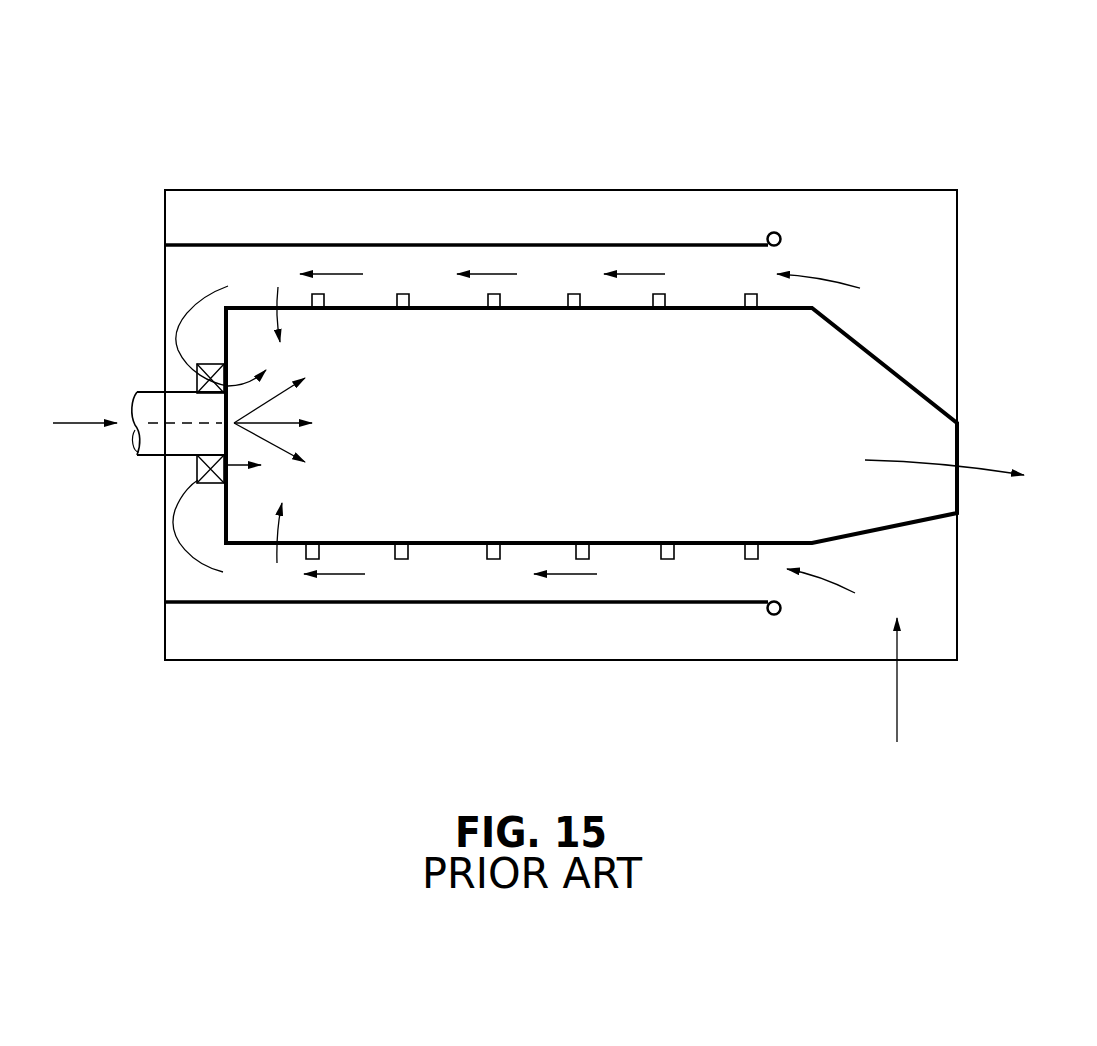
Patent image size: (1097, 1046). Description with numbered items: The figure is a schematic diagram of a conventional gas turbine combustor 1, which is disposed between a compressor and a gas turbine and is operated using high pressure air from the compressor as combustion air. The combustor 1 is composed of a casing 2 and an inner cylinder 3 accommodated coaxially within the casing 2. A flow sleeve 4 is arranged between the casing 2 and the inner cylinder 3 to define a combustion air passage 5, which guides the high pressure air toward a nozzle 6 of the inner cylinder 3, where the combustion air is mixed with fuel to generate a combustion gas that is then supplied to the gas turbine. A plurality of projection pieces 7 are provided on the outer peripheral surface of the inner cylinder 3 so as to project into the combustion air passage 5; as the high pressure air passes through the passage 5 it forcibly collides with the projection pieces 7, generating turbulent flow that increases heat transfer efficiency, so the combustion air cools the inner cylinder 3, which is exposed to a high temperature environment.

The combustor 1 is at (848, 146).
The casing 2 is at (627, 190).
The inner cylinder 3 is at (535, 307).
The flow sleeve 4 is at (500, 245).
The combustion air passage 5 is at (430, 267).
The nozzle 6 is at (148, 392).
The projection pieces 7 is at (404, 292).